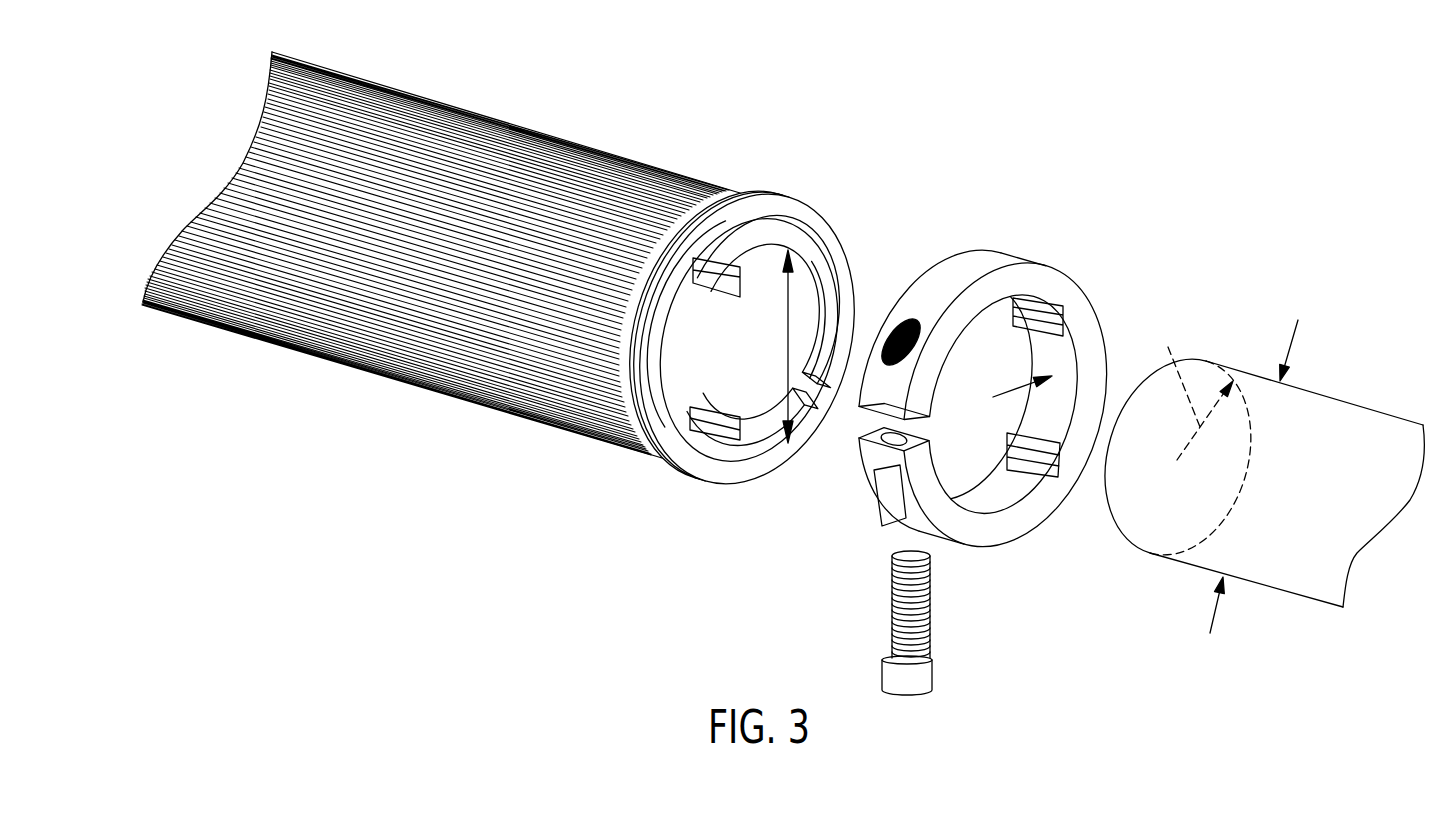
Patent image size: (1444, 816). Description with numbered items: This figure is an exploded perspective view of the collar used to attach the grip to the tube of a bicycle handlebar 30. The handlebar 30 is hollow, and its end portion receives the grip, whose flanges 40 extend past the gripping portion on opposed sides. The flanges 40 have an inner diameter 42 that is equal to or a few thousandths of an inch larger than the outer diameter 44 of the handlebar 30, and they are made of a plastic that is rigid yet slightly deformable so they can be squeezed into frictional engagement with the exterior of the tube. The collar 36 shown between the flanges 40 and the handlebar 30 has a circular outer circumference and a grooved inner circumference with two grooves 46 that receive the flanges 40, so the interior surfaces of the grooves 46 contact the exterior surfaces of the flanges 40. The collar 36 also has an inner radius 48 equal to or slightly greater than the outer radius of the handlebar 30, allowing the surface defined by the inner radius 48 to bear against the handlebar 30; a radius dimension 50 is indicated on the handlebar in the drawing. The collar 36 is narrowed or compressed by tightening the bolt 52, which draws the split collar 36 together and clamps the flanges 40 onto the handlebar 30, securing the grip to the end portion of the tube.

The bicycle handlebar 30 is at (1254, 481).
The collar 36 is at (982, 367).
The flanges 40 is at (805, 244).
The inner diameter 42 is at (785, 343).
The outer diameter 44 is at (1218, 616).
The grooves 46 is at (1003, 318).
The inner radius 48 is at (1010, 390).
The shaft radius 50 is at (1196, 389).
The bolt 52 is at (892, 612).